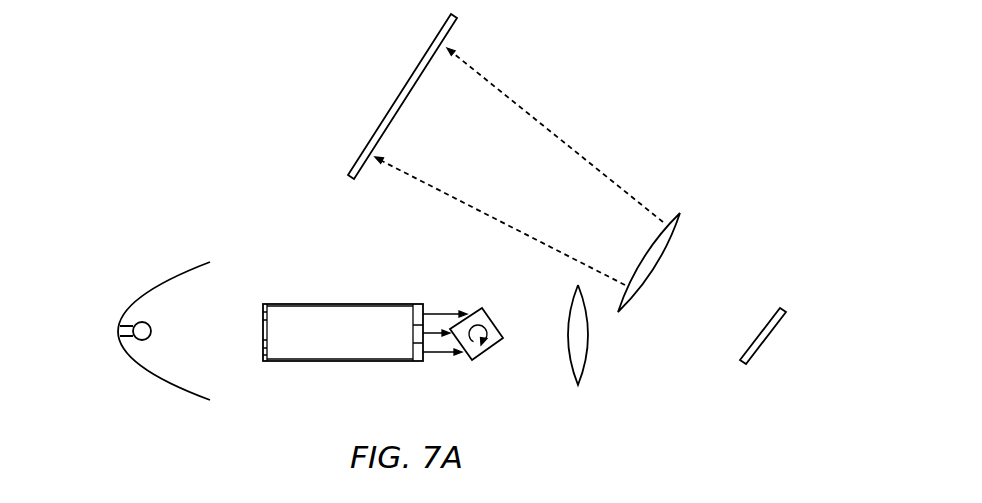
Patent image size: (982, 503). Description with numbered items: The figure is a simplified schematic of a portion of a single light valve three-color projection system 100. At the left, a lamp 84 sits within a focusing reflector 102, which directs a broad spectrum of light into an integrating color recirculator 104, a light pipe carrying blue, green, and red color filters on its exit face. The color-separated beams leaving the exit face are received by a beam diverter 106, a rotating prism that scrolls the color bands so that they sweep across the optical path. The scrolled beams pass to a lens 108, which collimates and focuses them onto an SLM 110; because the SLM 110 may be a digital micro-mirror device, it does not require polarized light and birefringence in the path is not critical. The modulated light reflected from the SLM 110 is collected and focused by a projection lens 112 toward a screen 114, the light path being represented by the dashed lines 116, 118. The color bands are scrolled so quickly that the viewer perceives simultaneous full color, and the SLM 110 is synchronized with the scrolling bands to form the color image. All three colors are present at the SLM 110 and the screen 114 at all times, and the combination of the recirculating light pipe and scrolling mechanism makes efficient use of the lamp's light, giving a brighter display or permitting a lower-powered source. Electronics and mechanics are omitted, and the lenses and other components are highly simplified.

The single light valve 3-color projection system 100 is at (710, 72).
The lamp 84 is at (98, 307).
The focusing reflector 102 is at (152, 282).
The integrating color recirculator 104 is at (335, 361).
The beam diverter 106 is at (486, 351).
The lens 108 is at (582, 370).
The SLM 110 is at (779, 308).
The projection lens 112 is at (678, 211).
The screen 114 is at (437, 37).
The dashed line 116 is at (468, 207).
The dashed line 118 is at (527, 113).